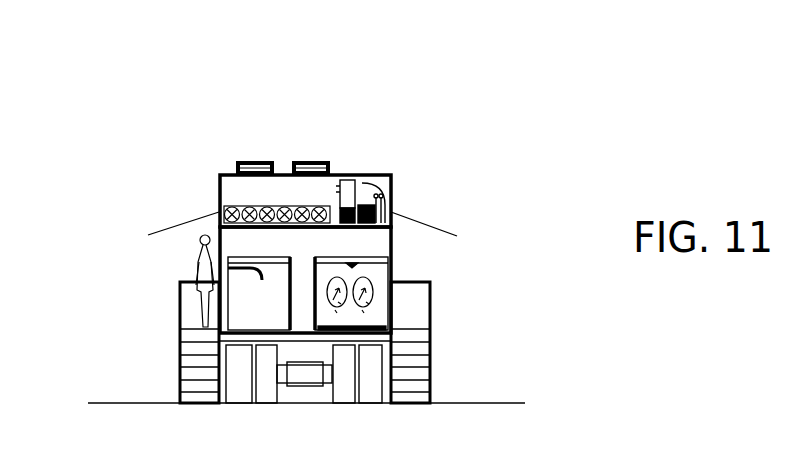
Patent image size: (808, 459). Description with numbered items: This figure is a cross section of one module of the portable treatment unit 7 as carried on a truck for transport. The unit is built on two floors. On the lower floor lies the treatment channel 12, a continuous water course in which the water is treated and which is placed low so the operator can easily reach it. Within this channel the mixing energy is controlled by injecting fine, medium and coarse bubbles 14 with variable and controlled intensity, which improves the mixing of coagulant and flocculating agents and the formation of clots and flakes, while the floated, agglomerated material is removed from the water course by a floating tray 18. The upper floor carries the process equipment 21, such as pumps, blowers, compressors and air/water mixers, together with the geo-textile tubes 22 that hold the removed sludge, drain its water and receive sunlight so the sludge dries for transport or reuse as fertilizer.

The portable treatment unit 7 is at (447, 210).
The treatment channel 12 is at (313, 250).
The fine, medium and coarse bubbles 14 is at (345, 323).
The floating tray 18 is at (258, 252).
The process equipment 21 is at (321, 162).
The geo-textile tubes 22 is at (233, 205).